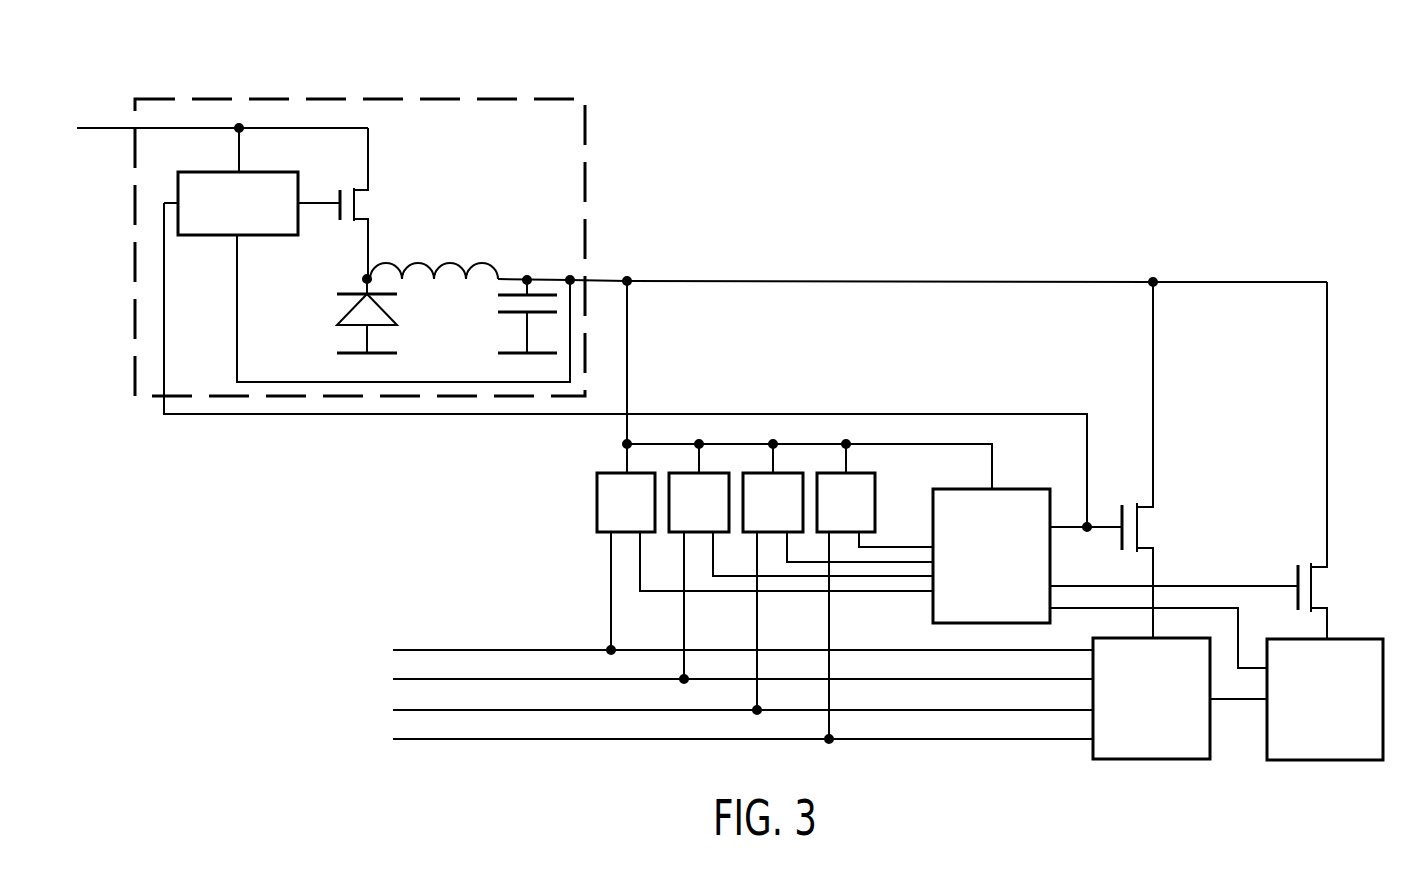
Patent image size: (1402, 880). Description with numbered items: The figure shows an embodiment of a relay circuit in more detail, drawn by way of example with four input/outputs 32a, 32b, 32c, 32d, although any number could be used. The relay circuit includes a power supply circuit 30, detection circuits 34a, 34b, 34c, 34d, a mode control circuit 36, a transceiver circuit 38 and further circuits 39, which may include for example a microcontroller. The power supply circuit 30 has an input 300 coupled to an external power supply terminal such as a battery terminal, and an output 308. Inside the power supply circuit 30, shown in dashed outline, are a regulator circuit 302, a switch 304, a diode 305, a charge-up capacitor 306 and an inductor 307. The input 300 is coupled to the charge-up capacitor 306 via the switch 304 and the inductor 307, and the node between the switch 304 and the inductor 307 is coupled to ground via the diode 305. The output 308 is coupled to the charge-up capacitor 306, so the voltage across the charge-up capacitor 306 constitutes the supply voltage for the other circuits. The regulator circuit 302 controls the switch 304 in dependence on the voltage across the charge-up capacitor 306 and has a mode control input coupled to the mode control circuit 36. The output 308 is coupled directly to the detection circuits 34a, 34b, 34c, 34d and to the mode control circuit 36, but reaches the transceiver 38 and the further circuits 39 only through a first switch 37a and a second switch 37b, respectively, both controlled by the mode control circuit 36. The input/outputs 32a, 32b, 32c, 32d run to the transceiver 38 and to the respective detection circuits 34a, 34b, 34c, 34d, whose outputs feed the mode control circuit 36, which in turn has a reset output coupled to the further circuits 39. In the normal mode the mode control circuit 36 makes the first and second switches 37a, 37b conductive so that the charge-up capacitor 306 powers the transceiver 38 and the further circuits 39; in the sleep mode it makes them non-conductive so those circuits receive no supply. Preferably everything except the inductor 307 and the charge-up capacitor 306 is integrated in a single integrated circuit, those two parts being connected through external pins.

The input 300 is at (110, 128).
The power supply circuit 30 is at (345, 128).
The regulator circuit 302 is at (205, 235).
The switch 304 is at (366, 200).
The diode 305 is at (358, 310).
The charge-up capacitor 306 is at (505, 300).
The inductor 307 is at (485, 262).
The output 308 is at (610, 280).
The detection circuit 34a is at (640, 473).
The detection circuit 34b is at (713, 473).
The detection circuit 34c is at (787, 473).
The detection circuit 34d is at (860, 473).
The mode control circuit 36 is at (1020, 500).
The first switch 37a is at (1143, 528).
The second switch 37b is at (1295, 573).
The transceiver circuit 38 is at (1185, 655).
The further circuits 39 is at (1360, 652).
The input/output 32a is at (420, 650).
The input/output 32b is at (462, 679).
The input/output 32c is at (497, 710).
The input/output 32d is at (560, 739).